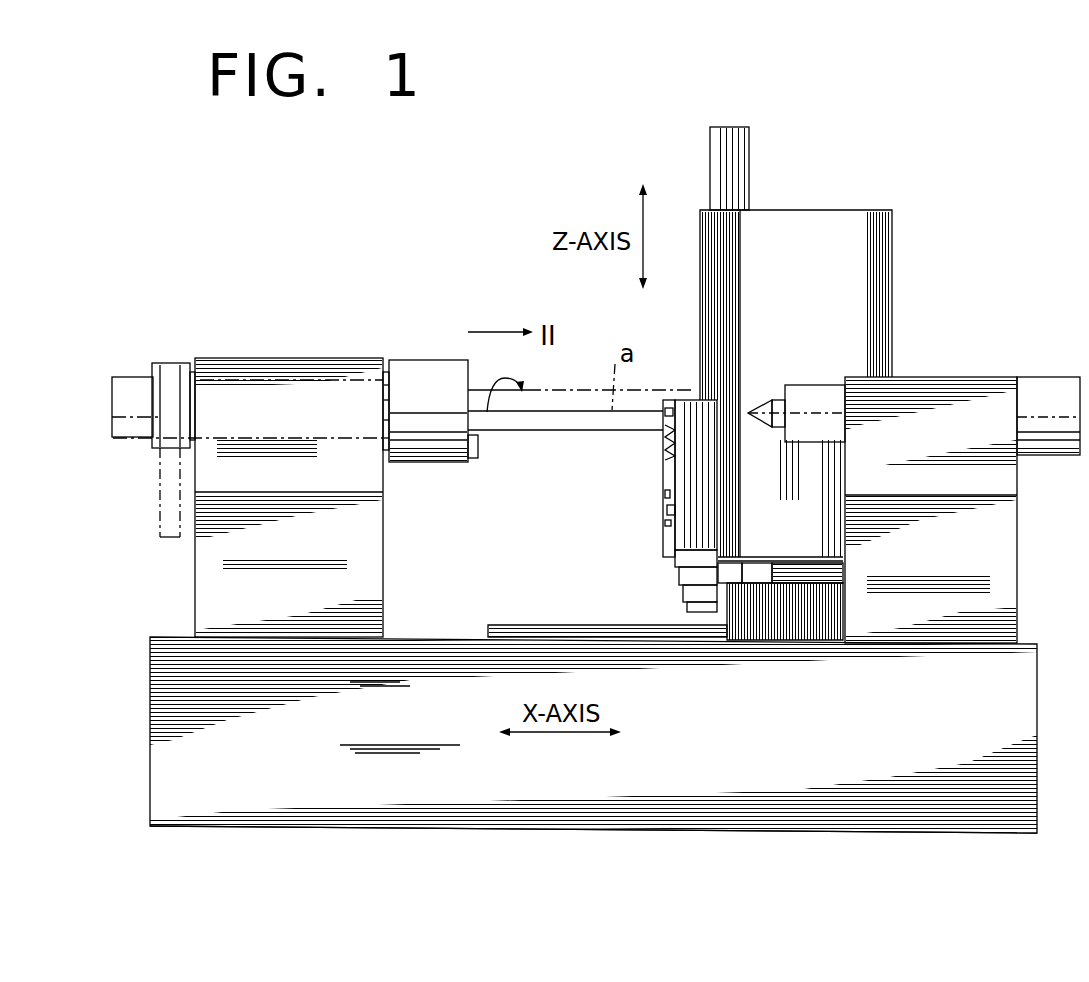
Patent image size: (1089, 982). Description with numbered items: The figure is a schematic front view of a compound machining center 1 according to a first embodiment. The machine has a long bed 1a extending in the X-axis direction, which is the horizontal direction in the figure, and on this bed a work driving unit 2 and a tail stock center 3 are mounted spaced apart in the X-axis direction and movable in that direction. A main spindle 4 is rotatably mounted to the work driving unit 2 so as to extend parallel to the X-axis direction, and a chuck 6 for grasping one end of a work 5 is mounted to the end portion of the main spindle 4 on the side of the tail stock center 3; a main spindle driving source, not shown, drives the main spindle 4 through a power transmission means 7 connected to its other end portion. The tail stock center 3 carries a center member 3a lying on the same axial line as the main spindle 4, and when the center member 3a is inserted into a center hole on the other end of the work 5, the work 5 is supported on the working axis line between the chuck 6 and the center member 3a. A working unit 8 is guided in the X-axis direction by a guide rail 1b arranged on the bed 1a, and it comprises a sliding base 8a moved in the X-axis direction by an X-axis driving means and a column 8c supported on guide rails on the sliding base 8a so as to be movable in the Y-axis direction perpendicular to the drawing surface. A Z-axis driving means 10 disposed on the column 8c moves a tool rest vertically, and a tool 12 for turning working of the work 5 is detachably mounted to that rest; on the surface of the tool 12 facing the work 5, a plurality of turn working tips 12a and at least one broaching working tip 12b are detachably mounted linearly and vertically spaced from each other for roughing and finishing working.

The compound machining center 1 is at (1047, 738).
The bed 1a is at (817, 800).
The guide rail 1b is at (522, 627).
The work driving unit 2 is at (362, 363).
The tail stock center 3 is at (982, 388).
The center member 3a is at (752, 405).
The main spindle 4 is at (278, 395).
The work 5 is at (575, 427).
The chuck 6 is at (437, 438).
The power transmission means 7 is at (167, 513).
The working unit 8 is at (843, 208).
The sliding base 8a is at (770, 625).
The column 8c is at (870, 255).
The Z-axis driving means 10 is at (732, 147).
The tool 12 is at (677, 492).
The turn working tips 12a is at (667, 500).
The broaching working tip 12b is at (668, 447).